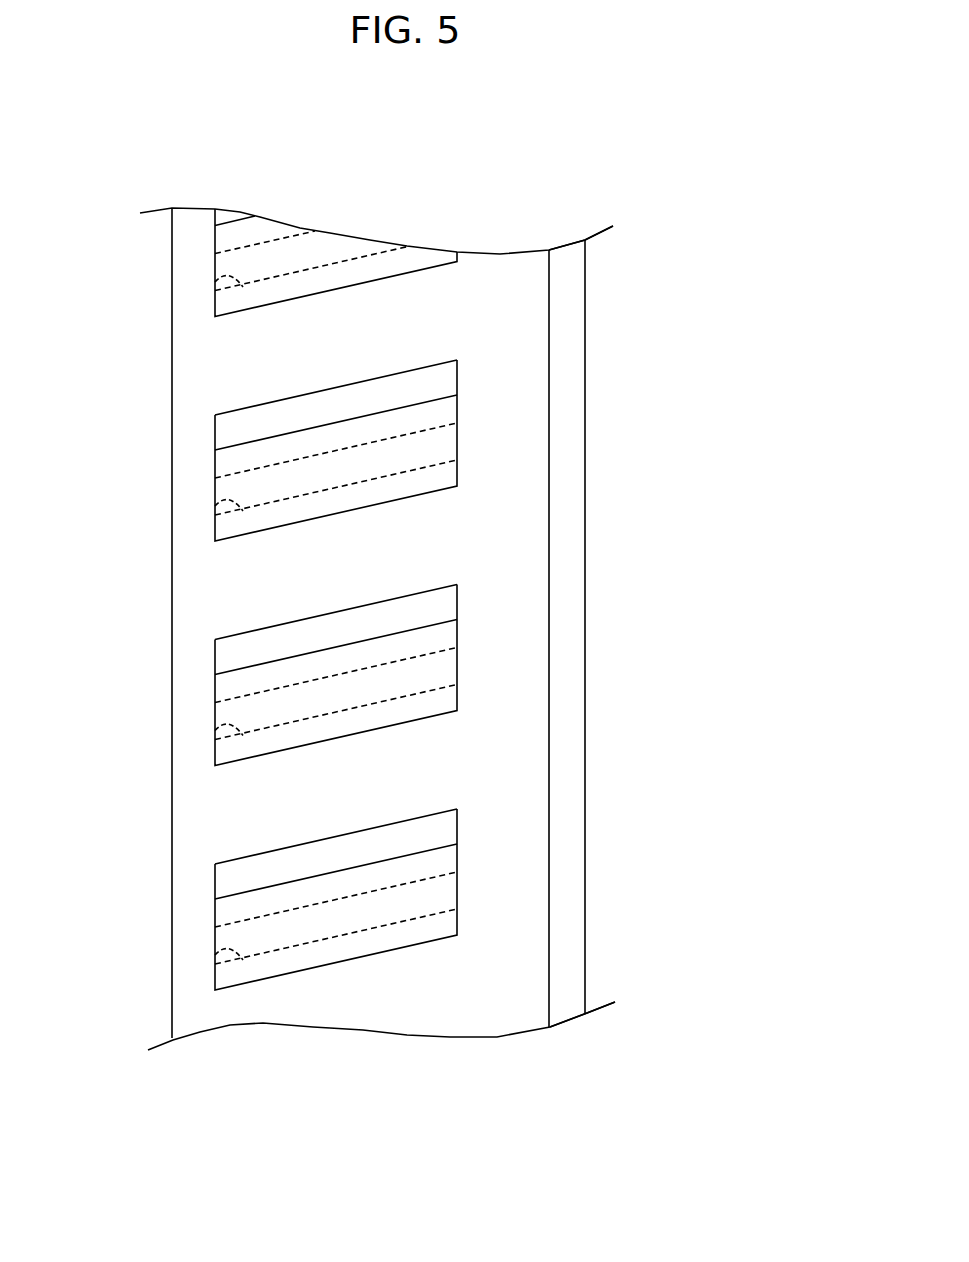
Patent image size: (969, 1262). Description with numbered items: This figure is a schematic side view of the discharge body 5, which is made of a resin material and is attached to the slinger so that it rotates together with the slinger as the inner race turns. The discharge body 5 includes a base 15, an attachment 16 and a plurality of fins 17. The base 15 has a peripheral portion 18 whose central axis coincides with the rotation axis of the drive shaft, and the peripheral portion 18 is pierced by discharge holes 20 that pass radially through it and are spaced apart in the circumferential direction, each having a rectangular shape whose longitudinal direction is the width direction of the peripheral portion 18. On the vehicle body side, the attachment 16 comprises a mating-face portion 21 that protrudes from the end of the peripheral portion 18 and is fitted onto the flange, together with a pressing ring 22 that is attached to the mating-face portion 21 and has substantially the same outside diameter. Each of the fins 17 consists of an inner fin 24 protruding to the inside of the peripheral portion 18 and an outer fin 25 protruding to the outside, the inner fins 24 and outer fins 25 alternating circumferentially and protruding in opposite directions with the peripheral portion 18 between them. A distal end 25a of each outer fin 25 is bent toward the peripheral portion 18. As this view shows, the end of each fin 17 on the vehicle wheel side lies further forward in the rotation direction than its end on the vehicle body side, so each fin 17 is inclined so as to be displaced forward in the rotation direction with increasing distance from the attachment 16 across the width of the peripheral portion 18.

The discharge body 5 is at (706, 137).
The base 15 is at (402, 1013).
The attachment 16 is at (565, 527).
The fins 17 is at (447, 415).
The peripheral portion 18 is at (313, 1008).
The discharge holes 20 is at (216, 276).
The mating-face portion 21 is at (502, 467).
The pressing ring 22 is at (570, 718).
The inner fin 24 is at (232, 257).
The outer fin 25 is at (230, 235).
The distal end 25a is at (225, 427).